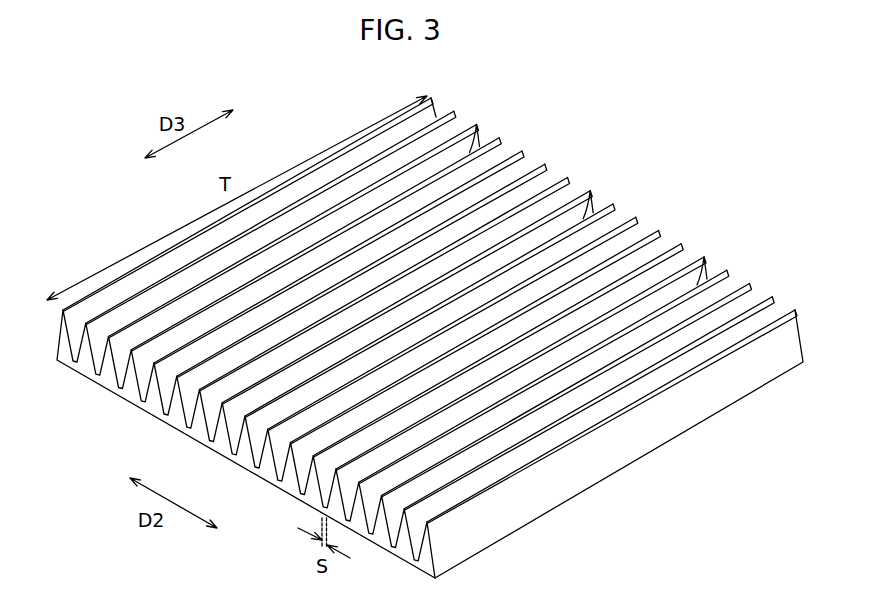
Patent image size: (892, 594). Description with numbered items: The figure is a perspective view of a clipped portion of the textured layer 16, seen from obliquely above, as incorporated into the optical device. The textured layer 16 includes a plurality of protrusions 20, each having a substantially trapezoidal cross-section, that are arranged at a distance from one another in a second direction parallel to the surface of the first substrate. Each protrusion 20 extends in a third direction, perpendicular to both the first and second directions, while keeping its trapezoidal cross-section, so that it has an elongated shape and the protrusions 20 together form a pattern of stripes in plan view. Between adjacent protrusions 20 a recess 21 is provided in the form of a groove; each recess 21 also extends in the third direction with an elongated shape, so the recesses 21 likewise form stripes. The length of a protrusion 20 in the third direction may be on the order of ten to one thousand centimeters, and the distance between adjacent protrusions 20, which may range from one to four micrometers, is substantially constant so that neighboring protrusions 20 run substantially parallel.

The textured layer 16 is at (730, 186).
The protrusion 20 is at (469, 146).
The recess 21 is at (488, 165).